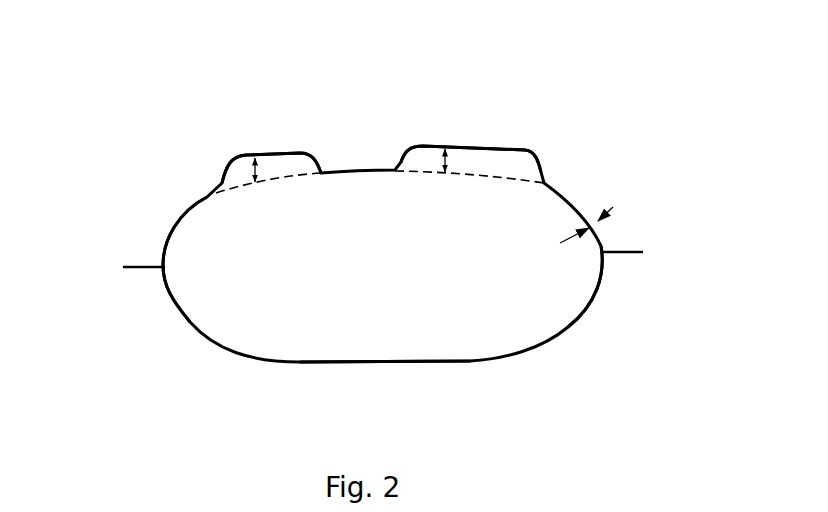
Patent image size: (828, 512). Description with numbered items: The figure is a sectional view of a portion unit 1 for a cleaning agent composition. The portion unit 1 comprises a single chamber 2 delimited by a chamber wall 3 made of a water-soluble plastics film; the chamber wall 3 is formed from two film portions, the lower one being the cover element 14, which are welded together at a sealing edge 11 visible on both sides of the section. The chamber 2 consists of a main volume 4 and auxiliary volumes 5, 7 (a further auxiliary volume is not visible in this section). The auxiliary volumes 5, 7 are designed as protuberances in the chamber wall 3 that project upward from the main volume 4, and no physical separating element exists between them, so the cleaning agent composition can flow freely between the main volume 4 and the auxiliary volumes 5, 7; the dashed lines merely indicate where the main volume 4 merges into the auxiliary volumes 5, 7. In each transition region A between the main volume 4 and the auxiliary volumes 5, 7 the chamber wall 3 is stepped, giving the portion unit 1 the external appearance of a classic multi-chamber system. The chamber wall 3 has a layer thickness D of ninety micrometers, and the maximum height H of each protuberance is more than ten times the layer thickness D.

The portion unit 1 is at (639, 150).
The chamber 2 is at (202, 305).
The chamber wall 3 is at (183, 218).
The main volume 4 is at (376, 274).
The auxiliary volume 5 is at (277, 170).
The auxiliary volume 7 is at (483, 158).
The sealing edge 11 is at (140, 267).
The cover element 14 is at (353, 362).
The transition region A is at (207, 186).
The maximum height of the protuberances H is at (252, 160).
The layer thickness D is at (613, 207).